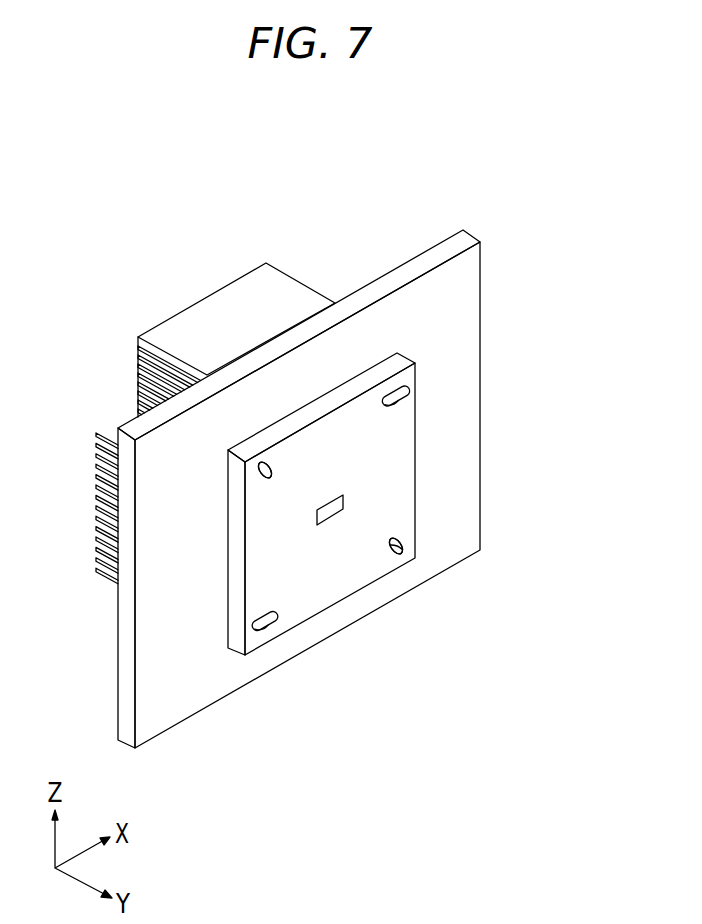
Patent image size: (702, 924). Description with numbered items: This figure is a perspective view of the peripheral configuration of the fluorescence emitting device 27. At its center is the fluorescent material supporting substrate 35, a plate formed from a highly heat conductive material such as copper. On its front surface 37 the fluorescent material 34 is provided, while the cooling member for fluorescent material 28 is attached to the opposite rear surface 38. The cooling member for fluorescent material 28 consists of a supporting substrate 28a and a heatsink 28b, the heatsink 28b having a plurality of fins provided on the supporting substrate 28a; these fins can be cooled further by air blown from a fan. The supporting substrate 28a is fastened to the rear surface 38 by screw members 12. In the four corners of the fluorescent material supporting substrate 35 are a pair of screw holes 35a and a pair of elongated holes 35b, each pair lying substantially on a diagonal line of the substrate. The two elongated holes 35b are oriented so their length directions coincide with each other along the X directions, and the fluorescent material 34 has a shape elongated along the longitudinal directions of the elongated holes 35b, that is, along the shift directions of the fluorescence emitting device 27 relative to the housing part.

The screw member 12 is at (270, 476).
The fluorescence emitting device 27 is at (309, 481).
The cooling member for fluorescent material 28 is at (273, 440).
The supporting substrate 28a is at (362, 293).
The heatsink 28b is at (250, 300).
The fluorescent material 34 is at (337, 517).
The fluorescent material supporting substrate 35 is at (292, 555).
The screw hole 35a is at (262, 474).
The elongated hole 35b is at (396, 401).
The front surface 37 is at (398, 469).
The rear surface 38 is at (245, 440).